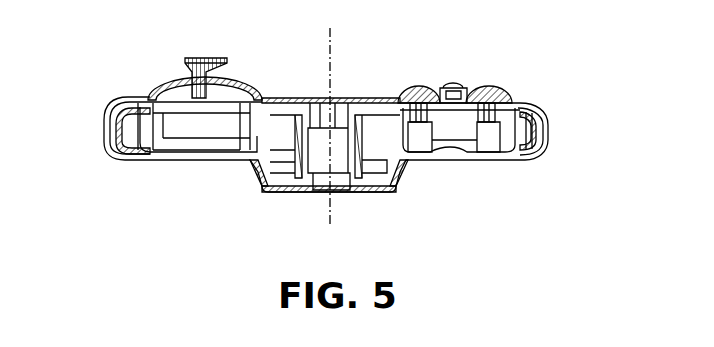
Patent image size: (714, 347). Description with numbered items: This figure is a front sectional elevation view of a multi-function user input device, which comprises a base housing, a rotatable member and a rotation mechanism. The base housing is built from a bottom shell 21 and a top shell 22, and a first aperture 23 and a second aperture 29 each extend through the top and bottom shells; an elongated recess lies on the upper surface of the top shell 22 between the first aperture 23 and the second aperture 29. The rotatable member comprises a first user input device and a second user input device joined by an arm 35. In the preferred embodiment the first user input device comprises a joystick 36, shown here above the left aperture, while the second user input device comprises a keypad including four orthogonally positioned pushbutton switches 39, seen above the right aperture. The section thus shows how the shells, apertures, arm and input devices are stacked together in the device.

The bottom shell 21 is at (512, 163).
The top shell 22 is at (547, 121).
The first aperture 23 is at (158, 152).
The second aperture 29 is at (433, 152).
The arm 35 is at (348, 103).
The joystick 36 is at (200, 60).
The pushbutton switches 39 is at (420, 93).